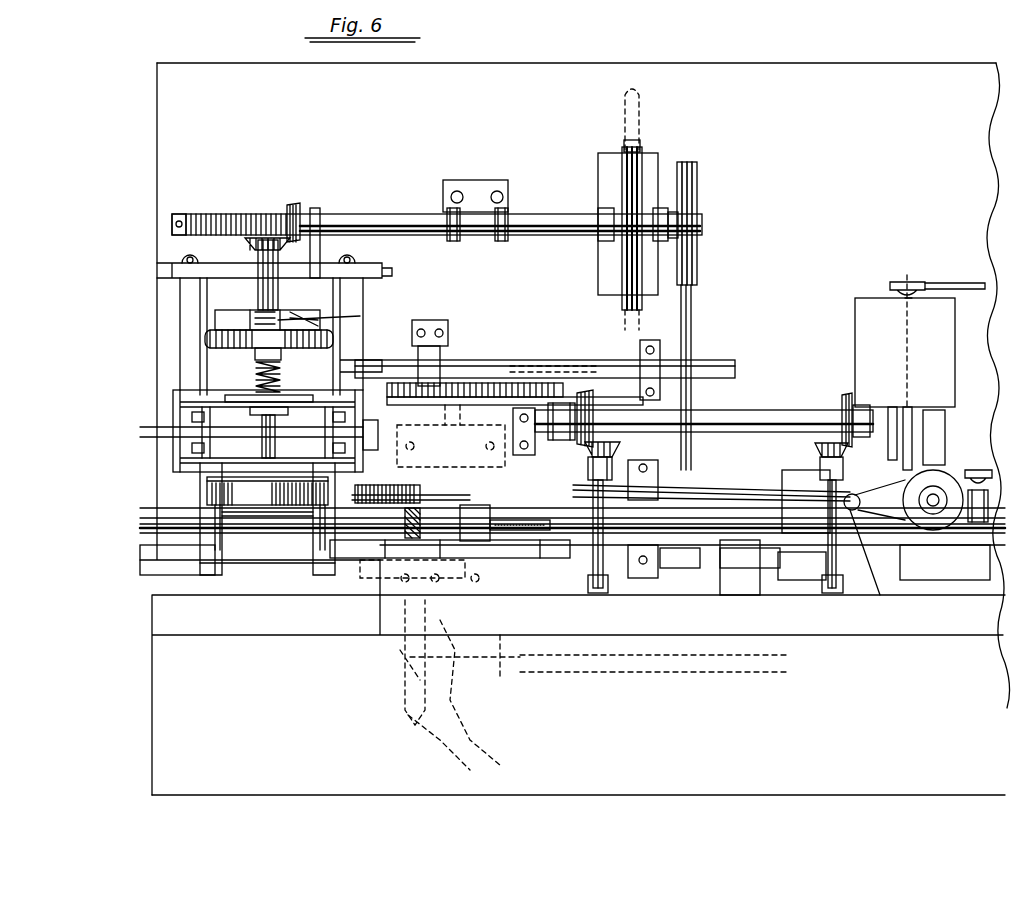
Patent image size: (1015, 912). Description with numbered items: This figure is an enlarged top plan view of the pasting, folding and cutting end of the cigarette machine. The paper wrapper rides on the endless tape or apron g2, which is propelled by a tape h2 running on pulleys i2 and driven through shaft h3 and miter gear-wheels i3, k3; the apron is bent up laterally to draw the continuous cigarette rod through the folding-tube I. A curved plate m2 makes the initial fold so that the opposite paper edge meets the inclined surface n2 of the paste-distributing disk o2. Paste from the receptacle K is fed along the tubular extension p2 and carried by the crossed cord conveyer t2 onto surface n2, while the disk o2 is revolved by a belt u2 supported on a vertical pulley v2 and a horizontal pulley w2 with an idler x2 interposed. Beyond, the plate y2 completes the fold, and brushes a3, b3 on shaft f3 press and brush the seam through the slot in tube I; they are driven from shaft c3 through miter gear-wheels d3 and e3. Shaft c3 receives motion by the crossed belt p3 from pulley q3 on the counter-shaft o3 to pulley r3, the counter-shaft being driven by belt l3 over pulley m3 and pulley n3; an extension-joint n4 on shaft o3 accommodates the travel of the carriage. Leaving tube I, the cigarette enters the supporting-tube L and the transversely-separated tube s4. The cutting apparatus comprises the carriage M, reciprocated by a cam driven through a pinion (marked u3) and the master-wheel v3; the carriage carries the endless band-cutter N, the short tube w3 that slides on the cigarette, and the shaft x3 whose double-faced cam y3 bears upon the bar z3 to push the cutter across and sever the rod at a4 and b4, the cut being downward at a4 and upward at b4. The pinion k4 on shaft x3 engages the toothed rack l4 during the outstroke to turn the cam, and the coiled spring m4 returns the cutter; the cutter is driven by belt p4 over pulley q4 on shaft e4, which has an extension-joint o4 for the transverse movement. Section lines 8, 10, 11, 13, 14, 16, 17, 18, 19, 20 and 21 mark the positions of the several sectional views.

The toothed rack l4 is at (202, 213).
The extension-joint n4 is at (395, 215).
The pinion k4 is at (285, 210).
The section line 11 11 is at (268, 690).
The section line 10 10 is at (175, 222).
The pulley n3 is at (622, 177).
The pulley m3 is at (640, 125).
The belt l3 is at (640, 160).
The counter-shaft o3 is at (546, 199).
The pulley q3 is at (700, 185).
The crossed belt p3 is at (693, 320).
The pulley r3 is at (700, 375).
The extension-joint o4 is at (262, 290).
The belt p4 is at (215, 320).
The cam y3 is at (205, 336).
The pulley q4 is at (255, 352).
The shaft e4 is at (258, 352).
The coiled spring m4 is at (256, 377).
The shaft x3 is at (281, 377).
The bar z3 is at (333, 306).
The carriage M is at (260, 437).
The cutting-knife N is at (207, 490).
The severing point b4 is at (210, 537).
The severing point a4 is at (328, 530).
The transversely-separated tube s4 is at (258, 520).
The master-wheel v3 is at (455, 385).
The rack u3 is at (525, 383).
The section line 13 13 is at (548, 690).
The section line 8 8 is at (606, 397).
The endless tape or apron g2 is at (405, 520).
The section line 21 is at (440, 600).
The shaft c3 is at (745, 405).
The miter gear-wheels d3 is at (583, 390).
The miter gear-wheels e3 is at (590, 450).
The vertical pulley v2 is at (588, 470).
The cord conveyer t2 is at (850, 462).
The shaft f3 is at (598, 570).
The section line 20 is at (640, 602).
The belt u2 is at (715, 492).
The section line 19 is at (800, 523).
The supporting-tube L is at (412, 540).
The brush a3 is at (548, 540).
The short tube w3 is at (372, 560).
The pulleys i2 is at (400, 680).
The miter gear-wheels i3 is at (439, 742).
The miter gear-wheels k3 is at (482, 692).
The tape h2 is at (495, 650).
The shaft h3 is at (630, 672).
The paste-receptacle K is at (950, 340).
The section line 14 14 is at (915, 268).
The tubular extension p2 is at (972, 283).
The paste-distributing disk o2 is at (940, 460).
The section line 18 is at (915, 565).
The section line 16 16 is at (978, 490).
The section line 17 is at (1000, 560).
The folding plate y2 is at (863, 563).
The idler x2 is at (858, 560).
The inclined surface n2 is at (912, 540).
The horizontal pulley w2 is at (945, 540).
The curved folding-plate m2 is at (960, 600).
The folding-tube I is at (730, 535).
The brush b3 is at (782, 540).